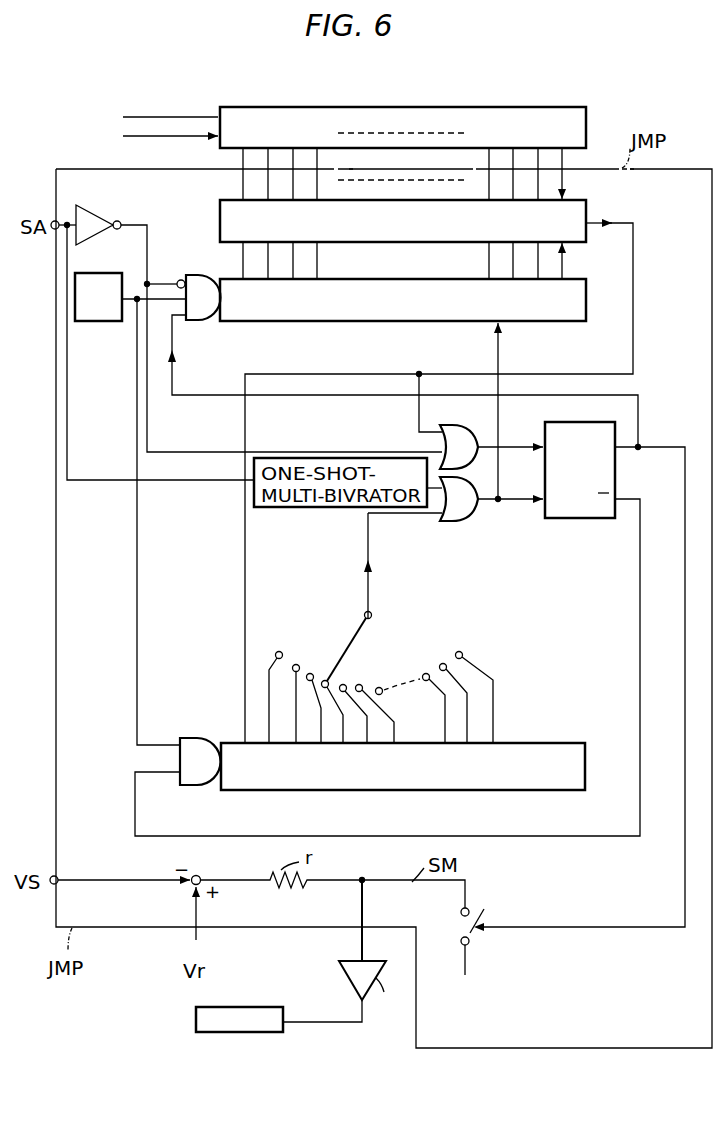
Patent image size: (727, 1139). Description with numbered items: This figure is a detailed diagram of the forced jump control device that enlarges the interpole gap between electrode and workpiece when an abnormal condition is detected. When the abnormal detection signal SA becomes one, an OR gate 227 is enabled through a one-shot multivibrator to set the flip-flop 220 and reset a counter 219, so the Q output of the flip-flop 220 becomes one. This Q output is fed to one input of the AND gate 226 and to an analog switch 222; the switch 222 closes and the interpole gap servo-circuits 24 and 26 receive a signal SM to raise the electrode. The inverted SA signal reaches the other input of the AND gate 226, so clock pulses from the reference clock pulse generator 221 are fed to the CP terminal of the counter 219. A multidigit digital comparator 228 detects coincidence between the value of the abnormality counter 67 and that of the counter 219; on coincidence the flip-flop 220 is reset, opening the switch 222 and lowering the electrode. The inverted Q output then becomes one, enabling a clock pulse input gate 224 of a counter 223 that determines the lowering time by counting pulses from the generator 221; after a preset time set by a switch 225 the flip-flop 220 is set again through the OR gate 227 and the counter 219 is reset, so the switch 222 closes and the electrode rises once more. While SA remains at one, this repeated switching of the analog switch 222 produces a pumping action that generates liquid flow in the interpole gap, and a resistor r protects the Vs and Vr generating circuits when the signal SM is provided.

The counter 67 is at (592, 86).
The digital comparator 228 is at (586, 207).
The counter 219 is at (540, 321).
The AND gate 226 is at (192, 275).
The reference clock pulse generator 221 is at (98, 321).
The flip-flop 220 is at (615, 482).
The OR gate 227 is at (468, 521).
The switch 225 is at (378, 620).
The counter 223 is at (505, 743).
The clock pulse input gate 224 is at (205, 738).
The analog switch 222 is at (476, 903).
The interpole gap servo-circuit 24 is at (342, 972).
The interpole gap servo-circuit 26 is at (196, 1020).